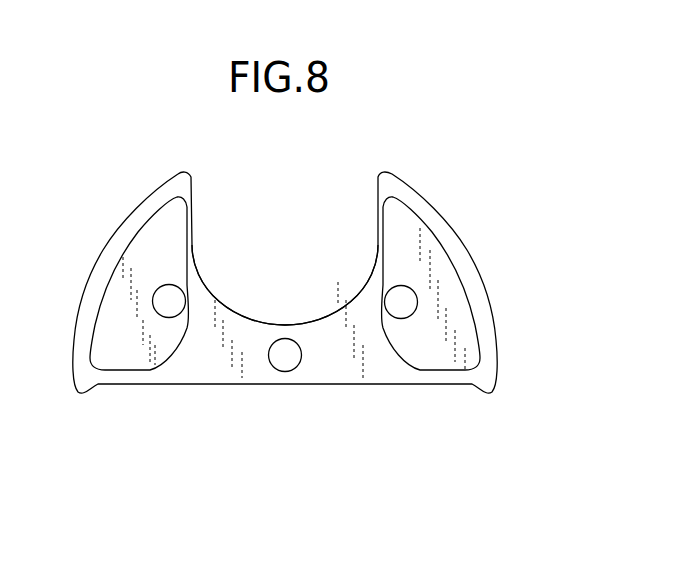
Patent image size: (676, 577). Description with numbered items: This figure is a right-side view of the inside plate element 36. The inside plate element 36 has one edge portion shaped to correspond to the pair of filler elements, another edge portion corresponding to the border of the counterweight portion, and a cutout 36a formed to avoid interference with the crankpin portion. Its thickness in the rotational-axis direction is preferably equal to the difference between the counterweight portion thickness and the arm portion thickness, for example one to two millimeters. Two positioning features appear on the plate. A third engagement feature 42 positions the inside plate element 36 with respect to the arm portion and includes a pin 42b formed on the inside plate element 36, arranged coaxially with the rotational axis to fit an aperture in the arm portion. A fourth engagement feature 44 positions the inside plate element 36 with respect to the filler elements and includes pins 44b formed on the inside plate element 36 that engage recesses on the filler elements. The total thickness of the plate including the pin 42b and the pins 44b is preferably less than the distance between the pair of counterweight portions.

The inside plate element 36 is at (465, 238).
The cutout 36a is at (378, 222).
The pins 44b is at (165, 318).
The fourth engagement feature 44 is at (323, 373).
The pin 42b is at (290, 371).
The third engagement feature 42 is at (318, 400).